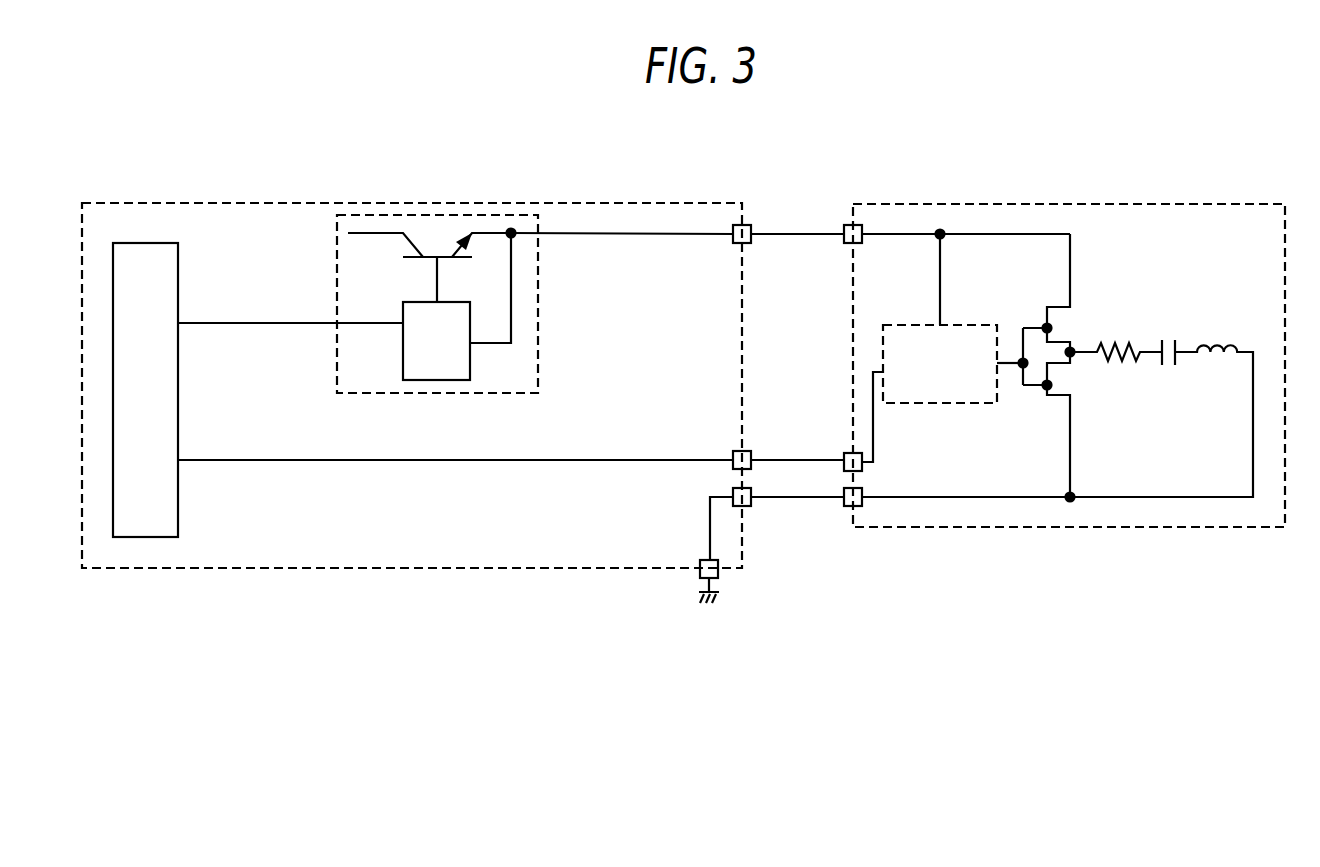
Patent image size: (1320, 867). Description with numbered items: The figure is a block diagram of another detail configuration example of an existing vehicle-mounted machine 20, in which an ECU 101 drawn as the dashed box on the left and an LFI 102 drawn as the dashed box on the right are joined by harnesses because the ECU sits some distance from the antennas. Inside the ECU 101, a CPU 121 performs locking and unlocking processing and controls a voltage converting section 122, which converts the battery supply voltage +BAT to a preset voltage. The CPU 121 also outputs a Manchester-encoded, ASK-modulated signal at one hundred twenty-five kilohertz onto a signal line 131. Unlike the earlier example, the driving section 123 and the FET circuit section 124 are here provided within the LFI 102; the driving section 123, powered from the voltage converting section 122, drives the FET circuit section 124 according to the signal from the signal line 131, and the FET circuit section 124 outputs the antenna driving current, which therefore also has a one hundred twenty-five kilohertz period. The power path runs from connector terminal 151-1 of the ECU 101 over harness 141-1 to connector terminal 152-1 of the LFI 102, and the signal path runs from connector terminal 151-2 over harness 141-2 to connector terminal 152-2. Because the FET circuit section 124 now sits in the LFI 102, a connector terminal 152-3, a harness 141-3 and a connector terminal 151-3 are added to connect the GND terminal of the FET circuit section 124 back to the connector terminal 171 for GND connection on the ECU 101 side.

The vehicle-mounted machine 20 is at (602, 614).
The ECU 101 is at (426, 202).
The LFI 102 is at (1074, 203).
The CPU 121 is at (180, 393).
The voltage converting section 122 is at (540, 306).
The driving section 123 is at (936, 404).
The FET circuit section 124 is at (1050, 330).
The signal line 131 is at (436, 459).
The harness 141-1 is at (783, 237).
The harness 141-2 is at (779, 459).
The harness 141-3 is at (792, 500).
The connector terminal 151-1 is at (733, 243).
The connector terminal 151-2 is at (733, 455).
The connector terminal 151-3 is at (752, 507).
The connector terminal 152-1 is at (852, 225).
The connector terminal 152-2 is at (862, 467).
The connector terminal 152-3 is at (850, 506).
The connector terminal for GND connection 171 is at (699, 565).